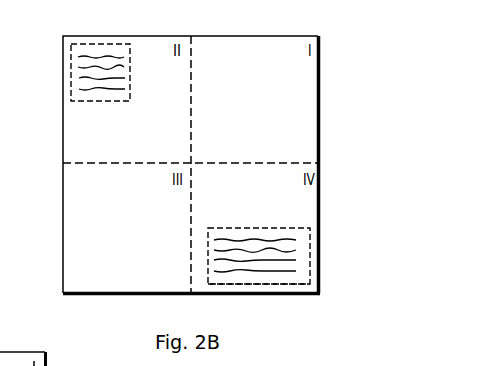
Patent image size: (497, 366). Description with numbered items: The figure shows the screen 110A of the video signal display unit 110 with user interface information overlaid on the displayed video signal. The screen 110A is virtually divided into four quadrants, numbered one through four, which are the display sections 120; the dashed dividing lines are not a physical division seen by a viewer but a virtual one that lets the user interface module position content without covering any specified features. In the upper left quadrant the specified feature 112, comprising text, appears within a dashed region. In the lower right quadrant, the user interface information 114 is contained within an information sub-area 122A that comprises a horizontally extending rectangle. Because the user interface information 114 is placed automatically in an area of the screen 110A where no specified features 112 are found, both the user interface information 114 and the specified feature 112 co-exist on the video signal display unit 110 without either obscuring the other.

The video signal display unit 110 is at (320, 102).
The screen 110A is at (85, 255).
The specified feature 112 is at (72, 78).
The user interface information 114 is at (287, 240).
The display sections 120 is at (267, 215).
The information sub-area 122A is at (262, 285).